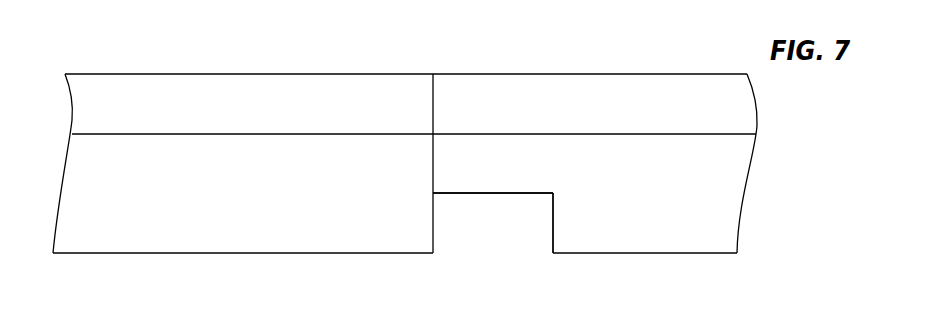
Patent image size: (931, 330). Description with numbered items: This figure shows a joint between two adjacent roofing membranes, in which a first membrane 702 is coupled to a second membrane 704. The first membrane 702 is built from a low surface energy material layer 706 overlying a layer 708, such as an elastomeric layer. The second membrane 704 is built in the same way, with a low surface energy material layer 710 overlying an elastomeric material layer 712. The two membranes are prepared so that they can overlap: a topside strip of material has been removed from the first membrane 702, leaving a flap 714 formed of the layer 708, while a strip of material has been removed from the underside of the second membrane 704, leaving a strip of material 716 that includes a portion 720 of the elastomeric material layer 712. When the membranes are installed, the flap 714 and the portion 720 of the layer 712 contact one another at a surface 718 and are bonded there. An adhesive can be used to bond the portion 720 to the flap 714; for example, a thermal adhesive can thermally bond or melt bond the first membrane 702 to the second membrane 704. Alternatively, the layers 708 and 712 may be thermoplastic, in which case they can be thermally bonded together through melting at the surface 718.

The first membrane 702 is at (192, 41).
The second membrane 704 is at (630, 54).
The low surface energy material layer 706 is at (103, 97).
The elastomeric layer 708 is at (193, 232).
The low surface energy material layer 710 is at (728, 103).
The elastomeric material layer 712 is at (637, 223).
The flap 714 is at (457, 228).
The strip of material 716 is at (553, 62).
The surface 718 is at (470, 195).
The portion of the elastomeric material layer 720 is at (500, 172).